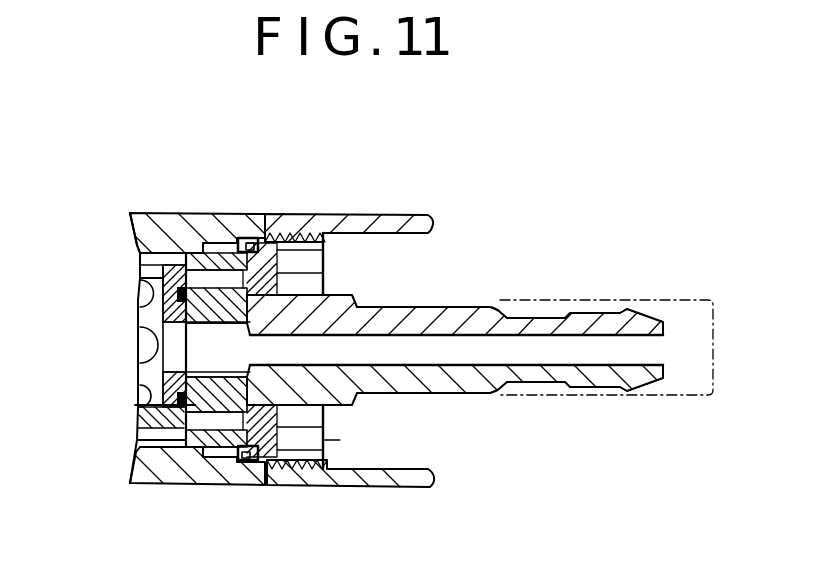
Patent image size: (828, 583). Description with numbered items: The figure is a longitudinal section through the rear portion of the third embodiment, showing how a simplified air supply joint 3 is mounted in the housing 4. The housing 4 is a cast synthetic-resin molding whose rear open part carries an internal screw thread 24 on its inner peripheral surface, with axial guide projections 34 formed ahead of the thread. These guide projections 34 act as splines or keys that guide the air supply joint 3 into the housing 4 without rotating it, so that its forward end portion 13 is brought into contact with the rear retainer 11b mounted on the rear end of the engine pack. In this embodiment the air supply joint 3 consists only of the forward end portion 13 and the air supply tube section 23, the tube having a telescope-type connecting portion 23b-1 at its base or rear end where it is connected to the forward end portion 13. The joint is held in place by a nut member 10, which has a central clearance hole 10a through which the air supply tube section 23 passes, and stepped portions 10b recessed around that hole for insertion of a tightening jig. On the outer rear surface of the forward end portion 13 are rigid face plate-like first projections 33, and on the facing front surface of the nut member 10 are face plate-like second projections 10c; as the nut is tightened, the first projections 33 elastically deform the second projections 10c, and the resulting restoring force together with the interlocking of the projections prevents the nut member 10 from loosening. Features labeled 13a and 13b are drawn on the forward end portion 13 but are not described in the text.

The air supply joint 3 is at (518, 322).
The housing 4 is at (153, 219).
The nut member 10 is at (278, 452).
The clearance hole 10a is at (323, 286).
The stepped portions 10b is at (315, 437).
The second projections 10c is at (236, 462).
The rear retainer 11b is at (186, 217).
The forward end portion 13 is at (223, 217).
The sleeve end portion 13a is at (195, 352).
The sleeve groove 13b is at (197, 217).
The air supply tube section 23 is at (438, 323).
The telescope-type connecting portion 23b-1 is at (640, 320).
The internal screw thread 24 is at (313, 217).
The first projections 33 is at (263, 217).
The guide projections 34 is at (228, 455).